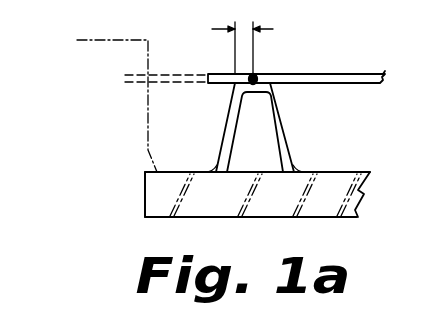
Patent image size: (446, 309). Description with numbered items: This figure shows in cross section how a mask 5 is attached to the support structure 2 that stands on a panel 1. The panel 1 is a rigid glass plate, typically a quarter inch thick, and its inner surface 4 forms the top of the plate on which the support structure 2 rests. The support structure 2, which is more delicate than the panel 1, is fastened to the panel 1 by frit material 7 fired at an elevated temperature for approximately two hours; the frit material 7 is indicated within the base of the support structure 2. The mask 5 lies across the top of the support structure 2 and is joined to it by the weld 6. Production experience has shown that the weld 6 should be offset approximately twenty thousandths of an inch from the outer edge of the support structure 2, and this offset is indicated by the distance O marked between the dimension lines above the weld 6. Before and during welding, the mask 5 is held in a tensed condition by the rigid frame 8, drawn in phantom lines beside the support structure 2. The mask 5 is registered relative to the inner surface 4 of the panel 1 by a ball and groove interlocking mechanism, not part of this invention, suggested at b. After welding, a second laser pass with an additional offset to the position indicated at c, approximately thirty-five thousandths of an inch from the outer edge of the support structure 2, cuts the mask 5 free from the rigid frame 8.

The panel 1 is at (145, 197).
The support structure 2 is at (287, 125).
The inner surface 4 is at (366, 172).
The mask 5 is at (355, 72).
The weld 6 is at (256, 73).
The frit material 7 is at (251, 134).
The rigid frame 8 is at (125, 38).
The offset distance O is at (242, 46).
The ball and groove interlocking mechanism b is at (150, 153).
The laser cut position c is at (212, 82).